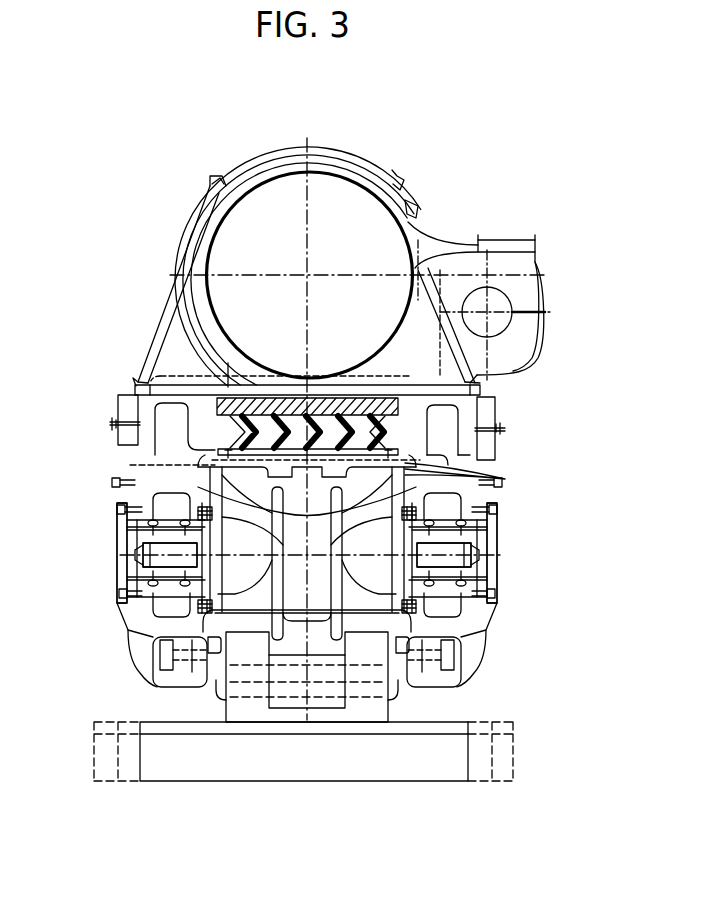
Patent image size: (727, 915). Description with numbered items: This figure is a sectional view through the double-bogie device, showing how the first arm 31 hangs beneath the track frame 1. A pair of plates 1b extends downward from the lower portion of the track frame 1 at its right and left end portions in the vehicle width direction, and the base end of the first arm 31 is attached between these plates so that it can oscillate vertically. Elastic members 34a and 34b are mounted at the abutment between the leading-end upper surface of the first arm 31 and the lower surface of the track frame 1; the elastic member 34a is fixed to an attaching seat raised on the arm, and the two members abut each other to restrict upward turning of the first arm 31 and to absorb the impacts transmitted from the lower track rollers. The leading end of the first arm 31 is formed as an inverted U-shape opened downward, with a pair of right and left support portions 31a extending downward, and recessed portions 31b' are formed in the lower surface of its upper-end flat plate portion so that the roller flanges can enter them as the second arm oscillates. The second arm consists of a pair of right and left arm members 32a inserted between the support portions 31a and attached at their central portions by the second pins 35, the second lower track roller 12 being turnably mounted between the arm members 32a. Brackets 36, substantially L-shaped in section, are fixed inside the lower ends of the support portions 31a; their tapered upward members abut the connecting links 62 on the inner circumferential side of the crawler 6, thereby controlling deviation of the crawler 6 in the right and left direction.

The track frame 1 is at (206, 212).
The plate 1b is at (128, 447).
The elastic member 34b is at (235, 425).
The elastic member 34a is at (243, 443).
The first arm 31 is at (170, 477).
The recessed portion 31b' is at (490, 478).
The second lower track roller 12 is at (168, 508).
The arm member 32a is at (147, 520).
The second pin 35 is at (142, 573).
The support portion 31a is at (160, 625).
The bracket 36 is at (160, 642).
The connecting link 62 is at (447, 652).
The crawler 6 is at (150, 720).